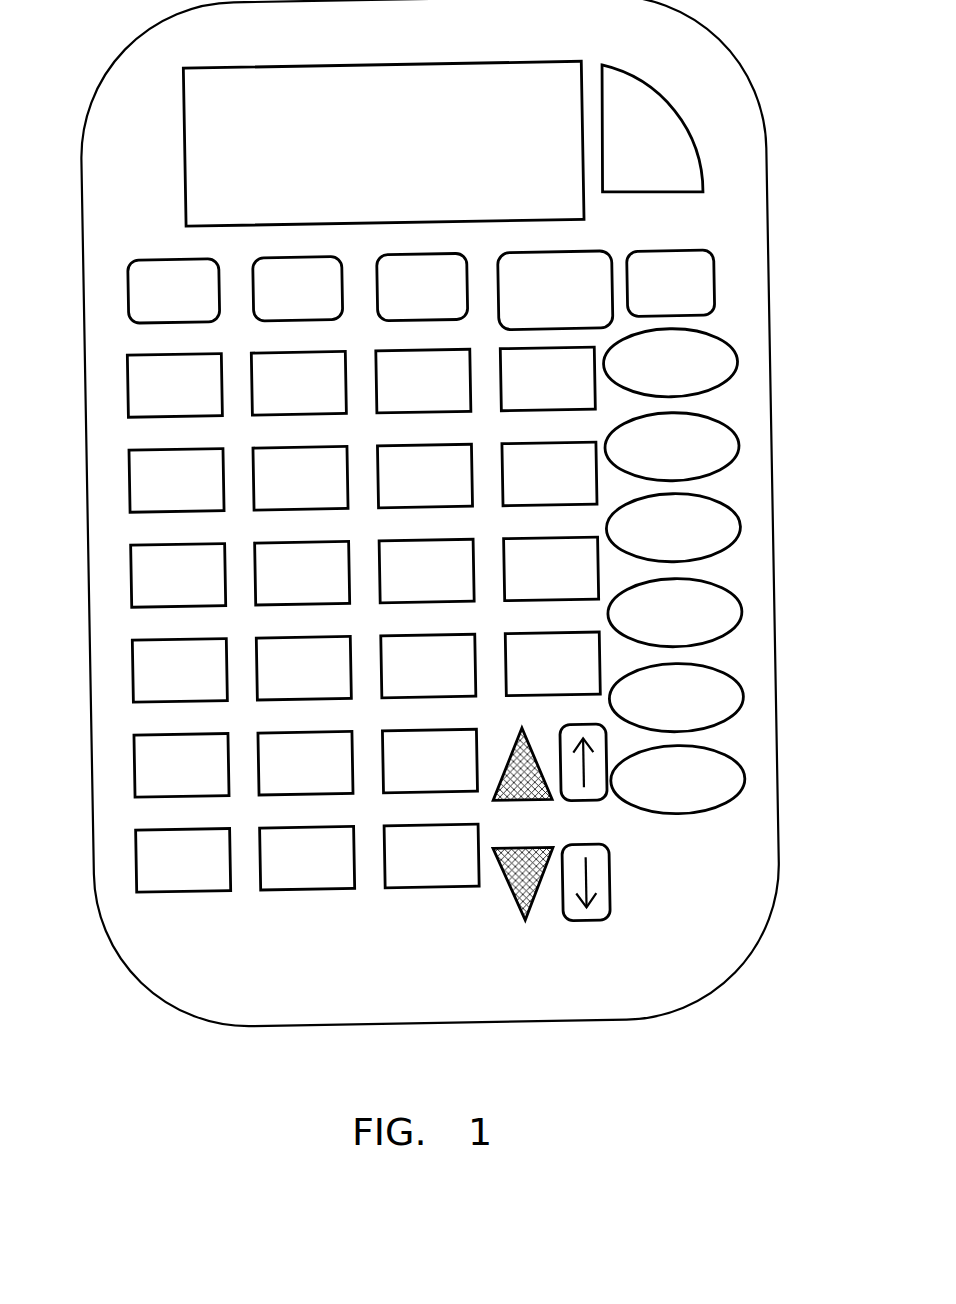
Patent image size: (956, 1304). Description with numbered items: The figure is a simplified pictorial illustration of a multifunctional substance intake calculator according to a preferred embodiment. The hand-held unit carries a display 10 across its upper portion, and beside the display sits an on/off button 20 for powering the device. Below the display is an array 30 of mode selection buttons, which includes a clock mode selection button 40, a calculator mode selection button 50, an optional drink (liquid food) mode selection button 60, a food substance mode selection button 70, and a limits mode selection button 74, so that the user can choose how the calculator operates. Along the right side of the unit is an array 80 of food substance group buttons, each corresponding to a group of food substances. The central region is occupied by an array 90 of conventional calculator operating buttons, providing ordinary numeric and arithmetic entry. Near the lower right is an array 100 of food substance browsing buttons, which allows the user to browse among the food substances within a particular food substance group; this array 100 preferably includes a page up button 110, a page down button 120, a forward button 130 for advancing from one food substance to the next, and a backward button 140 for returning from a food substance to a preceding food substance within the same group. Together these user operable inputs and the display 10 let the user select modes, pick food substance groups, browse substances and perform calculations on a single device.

The display 10 is at (384, 155).
The on/off button 20 is at (695, 165).
The array of mode selection buttons 30 is at (283, 239).
The clock mode selection button 40 is at (140, 303).
The calculator mode selection button 50 is at (270, 305).
The drink mode selection button 60 is at (393, 307).
The food substance mode selection button 70 is at (520, 323).
The limits mode selection button 74 is at (718, 277).
The array of food substance group buttons 80 is at (748, 488).
The array of conventional calculator operating buttons 90 is at (200, 425).
The array of food substance browsing buttons 100 is at (543, 942).
The page up button 110 is at (544, 797).
The page down button 120 is at (513, 906).
The forward button 130 is at (590, 793).
The backward button 140 is at (593, 913).